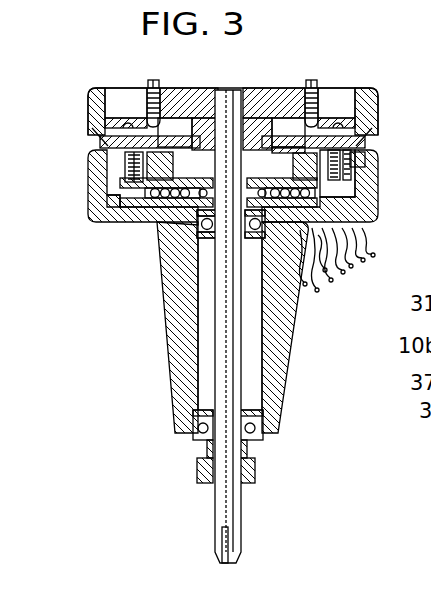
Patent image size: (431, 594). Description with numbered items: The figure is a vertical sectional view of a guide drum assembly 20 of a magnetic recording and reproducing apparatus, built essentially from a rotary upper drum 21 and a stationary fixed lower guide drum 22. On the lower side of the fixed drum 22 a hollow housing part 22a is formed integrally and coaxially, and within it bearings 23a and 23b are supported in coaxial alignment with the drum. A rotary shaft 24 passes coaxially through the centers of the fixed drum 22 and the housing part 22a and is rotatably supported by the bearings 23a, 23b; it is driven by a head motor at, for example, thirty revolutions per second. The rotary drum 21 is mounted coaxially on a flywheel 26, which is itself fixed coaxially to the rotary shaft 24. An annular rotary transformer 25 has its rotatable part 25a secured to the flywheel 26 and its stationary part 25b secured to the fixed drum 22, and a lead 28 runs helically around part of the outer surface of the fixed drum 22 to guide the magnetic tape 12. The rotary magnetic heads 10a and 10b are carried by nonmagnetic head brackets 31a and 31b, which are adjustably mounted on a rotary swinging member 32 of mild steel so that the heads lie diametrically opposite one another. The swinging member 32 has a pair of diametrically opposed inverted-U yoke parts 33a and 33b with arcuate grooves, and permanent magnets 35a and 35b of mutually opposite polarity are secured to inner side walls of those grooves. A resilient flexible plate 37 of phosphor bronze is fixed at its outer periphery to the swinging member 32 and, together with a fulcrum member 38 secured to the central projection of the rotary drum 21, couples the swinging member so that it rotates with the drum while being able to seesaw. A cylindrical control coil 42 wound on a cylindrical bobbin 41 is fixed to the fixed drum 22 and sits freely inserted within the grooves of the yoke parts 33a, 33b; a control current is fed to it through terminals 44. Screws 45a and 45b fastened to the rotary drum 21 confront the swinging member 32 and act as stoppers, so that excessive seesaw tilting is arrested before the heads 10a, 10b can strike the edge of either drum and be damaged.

The guide drum assembly 20 is at (64, 74).
The rotary upper drum 21 is at (96, 88).
The screw 45b is at (148, 82).
The resilient flexible plate 37 is at (172, 145).
The rotary shaft 24 is at (229, 100).
The fulcrum member 38 is at (262, 140).
The rotary swinging member 32 is at (293, 140).
The screw 45a is at (315, 88).
The head bracket 31a is at (357, 130).
The head bracket 31b is at (98, 135).
The rotary magnetic head 10b is at (105, 137).
The rotary magnetic head 10a is at (370, 148).
The yoke part 33b is at (96, 166).
The magnetic tape 12 is at (378, 179).
The fixed lower guide drum 22 is at (90, 196).
The lead 28 is at (378, 206).
The cylindrical control coil 42 is at (88, 216).
The cylindrical bobbin 41 is at (118, 212).
The permanent magnet 35b is at (150, 210).
The yoke part 33a is at (372, 262).
The annular rotary transformer 25 is at (163, 242).
The terminals 44 is at (366, 264).
The stationary part of rotary transformer 25b is at (170, 255).
The permanent magnet 35a is at (342, 280).
The bearing race 25a is at (173, 268).
The flywheel 26 is at (300, 282).
The bearing 23a is at (182, 300).
The housing part 22a is at (178, 360).
The bearing 23b is at (258, 440).